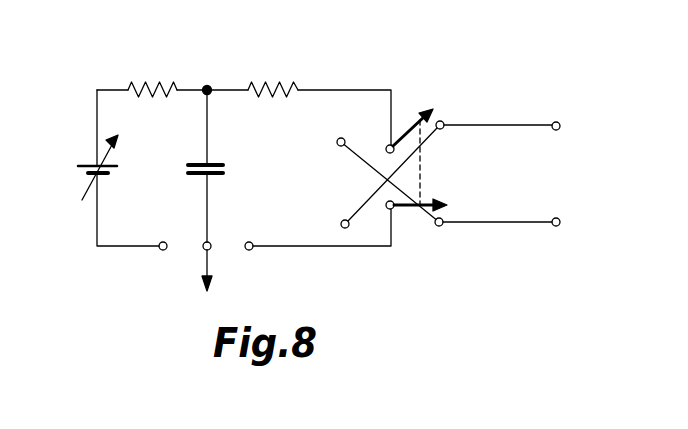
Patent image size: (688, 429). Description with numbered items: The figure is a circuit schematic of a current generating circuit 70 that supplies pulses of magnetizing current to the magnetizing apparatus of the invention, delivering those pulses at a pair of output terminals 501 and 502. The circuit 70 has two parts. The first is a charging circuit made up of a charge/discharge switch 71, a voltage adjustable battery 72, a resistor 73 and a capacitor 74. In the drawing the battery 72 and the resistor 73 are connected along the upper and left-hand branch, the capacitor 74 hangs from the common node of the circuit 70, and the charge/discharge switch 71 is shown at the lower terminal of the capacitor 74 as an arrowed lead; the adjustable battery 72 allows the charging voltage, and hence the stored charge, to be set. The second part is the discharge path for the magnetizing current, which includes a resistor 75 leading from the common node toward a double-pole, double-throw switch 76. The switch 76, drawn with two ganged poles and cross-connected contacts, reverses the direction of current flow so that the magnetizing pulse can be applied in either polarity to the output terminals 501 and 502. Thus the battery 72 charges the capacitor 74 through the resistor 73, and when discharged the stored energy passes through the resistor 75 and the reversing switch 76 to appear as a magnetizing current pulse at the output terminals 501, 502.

The current generating circuit 70 is at (231, 57).
The charge/discharge switch 71 is at (208, 263).
The voltage adjustable battery 72 is at (83, 165).
The resistor 73 is at (132, 82).
The capacitor 74 is at (223, 173).
The resistor 75 is at (264, 82).
The double-pole, double-throw switch 76 is at (430, 98).
The output terminal 501 is at (556, 122).
The output terminal 502 is at (556, 226).